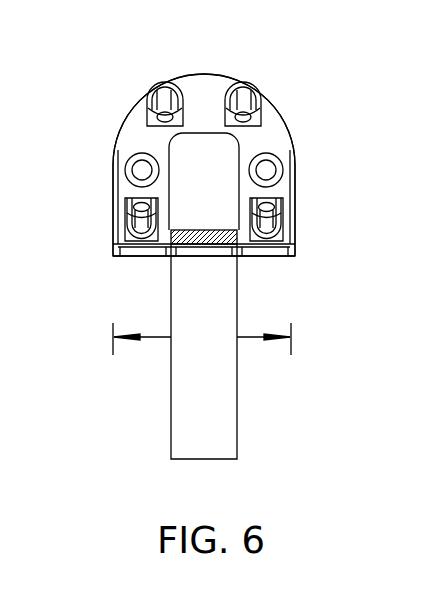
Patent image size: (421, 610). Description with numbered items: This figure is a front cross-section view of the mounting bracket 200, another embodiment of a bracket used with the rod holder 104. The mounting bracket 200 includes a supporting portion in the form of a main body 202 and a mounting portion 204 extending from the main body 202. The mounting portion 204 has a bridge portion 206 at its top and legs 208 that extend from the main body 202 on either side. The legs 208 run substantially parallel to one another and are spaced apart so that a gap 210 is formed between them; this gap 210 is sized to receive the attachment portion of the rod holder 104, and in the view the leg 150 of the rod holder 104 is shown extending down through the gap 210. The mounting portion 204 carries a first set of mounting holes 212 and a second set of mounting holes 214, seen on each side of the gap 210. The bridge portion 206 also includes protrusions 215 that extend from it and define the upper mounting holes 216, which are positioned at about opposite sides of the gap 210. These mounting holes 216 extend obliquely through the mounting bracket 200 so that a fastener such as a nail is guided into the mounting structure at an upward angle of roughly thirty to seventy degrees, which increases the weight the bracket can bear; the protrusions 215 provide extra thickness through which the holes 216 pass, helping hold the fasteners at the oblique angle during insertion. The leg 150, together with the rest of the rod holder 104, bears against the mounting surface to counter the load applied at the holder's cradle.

The mounting bracket 200 is at (289, 114).
The main body 202 is at (281, 255).
The mounting portion 204 is at (286, 136).
The bridge portion 206 is at (129, 116).
The legs 208 is at (120, 196).
The gap 210 is at (200, 132).
The first set of mounting holes 212 is at (268, 207).
The second set of mounting holes 214 is at (134, 168).
The protrusions 215 is at (161, 115).
The mounting holes 216 is at (153, 91).
The rod holder 104 is at (171, 413).
The leg 150 is at (237, 400).